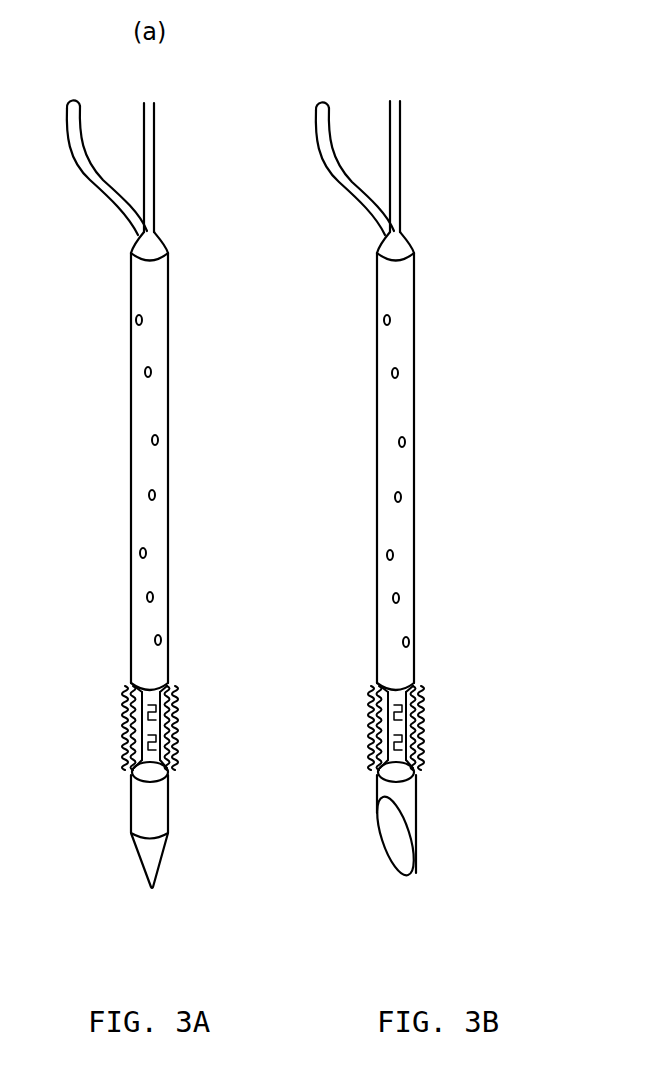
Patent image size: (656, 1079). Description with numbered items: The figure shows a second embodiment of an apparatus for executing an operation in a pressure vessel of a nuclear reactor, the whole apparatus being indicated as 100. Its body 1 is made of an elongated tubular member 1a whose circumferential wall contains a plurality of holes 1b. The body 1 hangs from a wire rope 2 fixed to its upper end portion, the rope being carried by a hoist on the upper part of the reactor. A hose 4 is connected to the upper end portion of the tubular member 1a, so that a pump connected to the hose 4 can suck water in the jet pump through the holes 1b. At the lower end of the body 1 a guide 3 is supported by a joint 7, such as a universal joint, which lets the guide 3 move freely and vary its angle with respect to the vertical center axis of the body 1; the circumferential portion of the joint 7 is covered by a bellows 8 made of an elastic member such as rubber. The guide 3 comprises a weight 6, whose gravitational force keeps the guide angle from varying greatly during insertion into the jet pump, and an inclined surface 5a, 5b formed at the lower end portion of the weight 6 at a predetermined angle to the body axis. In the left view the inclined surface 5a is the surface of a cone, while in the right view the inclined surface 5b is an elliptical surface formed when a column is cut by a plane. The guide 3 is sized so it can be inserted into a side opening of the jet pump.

In FIG. 3A, the body 1 is at (198, 471).
In FIG. 3B, the body 1 is at (445, 471).
In FIG. 3A, the tubular member 1a is at (147, 398).
In FIG. 3B, the tubular member 1a is at (435, 481).
In FIG. 3A, the holes 1b is at (158, 438).
In FIG. 3B, the holes 1b is at (446, 439).
In FIG. 3A, the wire rope 2 is at (150, 130).
In FIG. 3B, the wire rope 2 is at (418, 180).
In FIG. 3A, the guide 3 is at (205, 829).
In FIG. 3B, the guide 3 is at (451, 819).
In FIG. 3A, the hose 4 is at (100, 188).
In FIG. 3B, the hose 4 is at (339, 168).
In FIG. 3A, the inclined surface 5a is at (185, 860).
In FIG. 3B, the inclined surface 5b is at (432, 836).
In FIG. 3A, the weight 6 is at (157, 797).
In FIG. 3B, the weight 6 is at (435, 820).
In FIG. 3A, the joint 7 is at (153, 738).
In FIG. 3B, the joint 7 is at (429, 722).
In FIG. 3A, the bellows 8 is at (130, 722).
In FIG. 3B, the bellows 8 is at (358, 733).
In FIG. 3A, the catheter device 100 is at (203, 311).
In FIG. 3B, the catheter device 100 is at (551, 314).